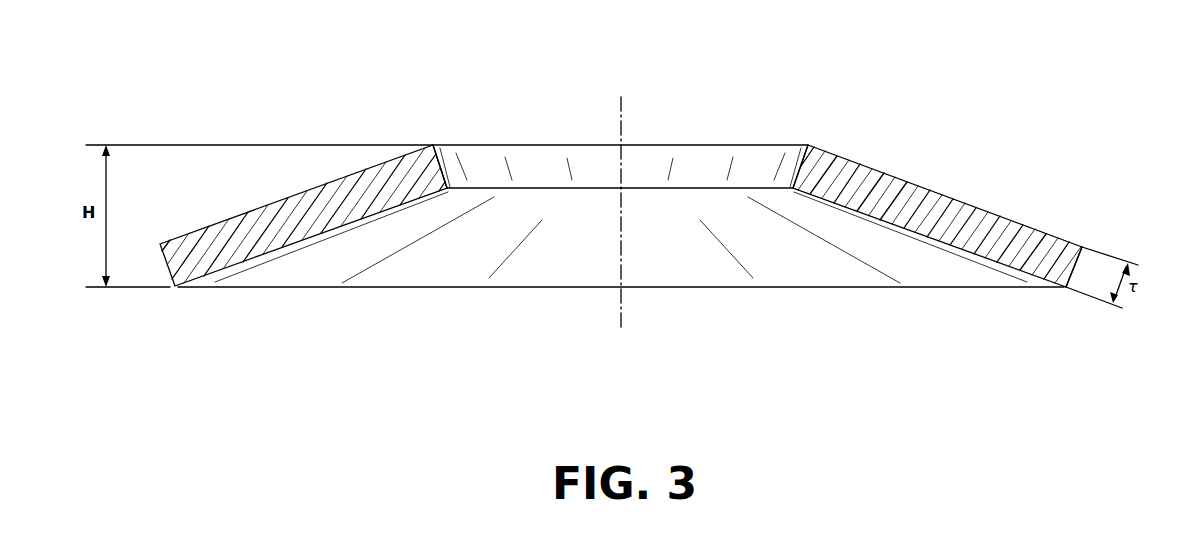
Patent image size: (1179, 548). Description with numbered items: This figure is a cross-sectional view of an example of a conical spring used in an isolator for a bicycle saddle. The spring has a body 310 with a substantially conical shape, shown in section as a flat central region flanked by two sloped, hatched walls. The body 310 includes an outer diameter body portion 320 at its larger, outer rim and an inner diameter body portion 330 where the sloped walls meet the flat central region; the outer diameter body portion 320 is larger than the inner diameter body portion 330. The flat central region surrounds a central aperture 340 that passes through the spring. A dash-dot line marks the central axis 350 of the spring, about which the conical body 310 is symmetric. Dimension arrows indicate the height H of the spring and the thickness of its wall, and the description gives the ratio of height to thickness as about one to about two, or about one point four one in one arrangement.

The body 310 is at (950, 217).
The outer diameter body portion 320 is at (1067, 288).
The inner diameter body portion 330 is at (808, 146).
The central aperture 340 is at (680, 140).
The central axis 350 is at (620, 117).